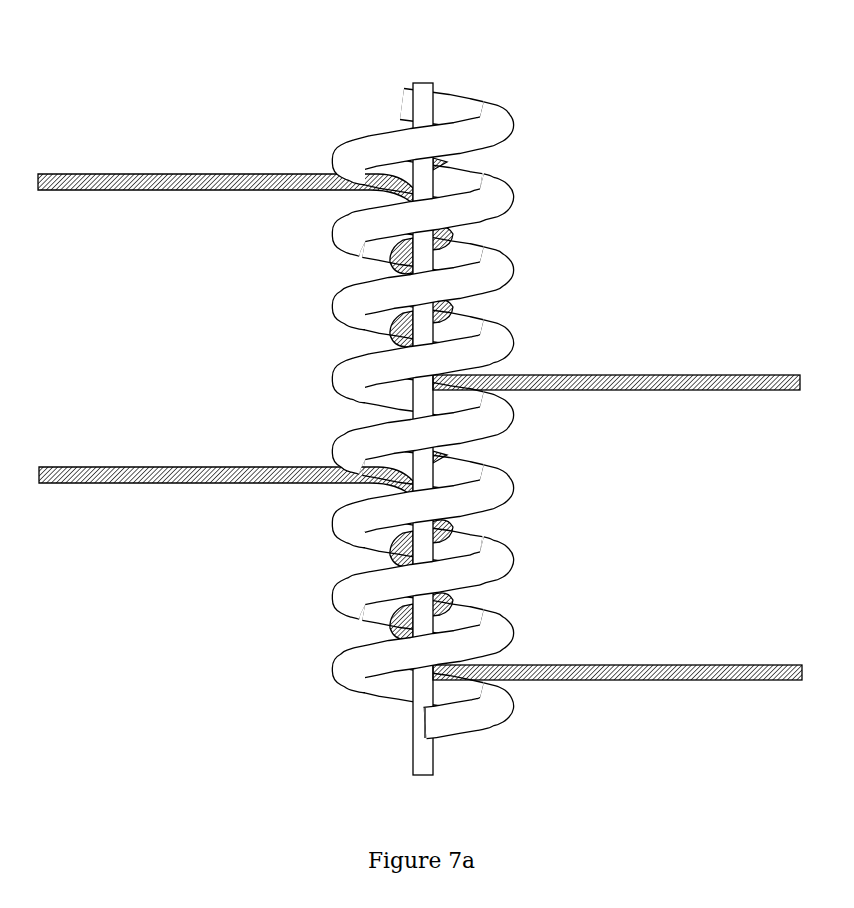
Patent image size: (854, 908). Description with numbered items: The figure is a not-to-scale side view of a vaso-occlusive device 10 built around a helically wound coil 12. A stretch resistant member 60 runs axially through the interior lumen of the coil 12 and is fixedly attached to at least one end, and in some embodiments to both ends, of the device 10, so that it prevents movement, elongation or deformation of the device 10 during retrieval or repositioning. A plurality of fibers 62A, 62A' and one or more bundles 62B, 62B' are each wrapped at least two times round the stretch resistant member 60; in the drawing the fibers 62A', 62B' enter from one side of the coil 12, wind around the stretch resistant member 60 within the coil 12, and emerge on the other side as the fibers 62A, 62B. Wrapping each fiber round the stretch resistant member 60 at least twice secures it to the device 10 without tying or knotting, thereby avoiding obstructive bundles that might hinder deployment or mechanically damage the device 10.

The device 10 is at (224, 82).
The coil 12 is at (358, 663).
The stretch resistant member 60 is at (420, 103).
The fiber 62A is at (616, 358).
The fiber 62A' is at (245, 239).
The bundle 62B is at (617, 653).
The bundle 62B' is at (246, 536).